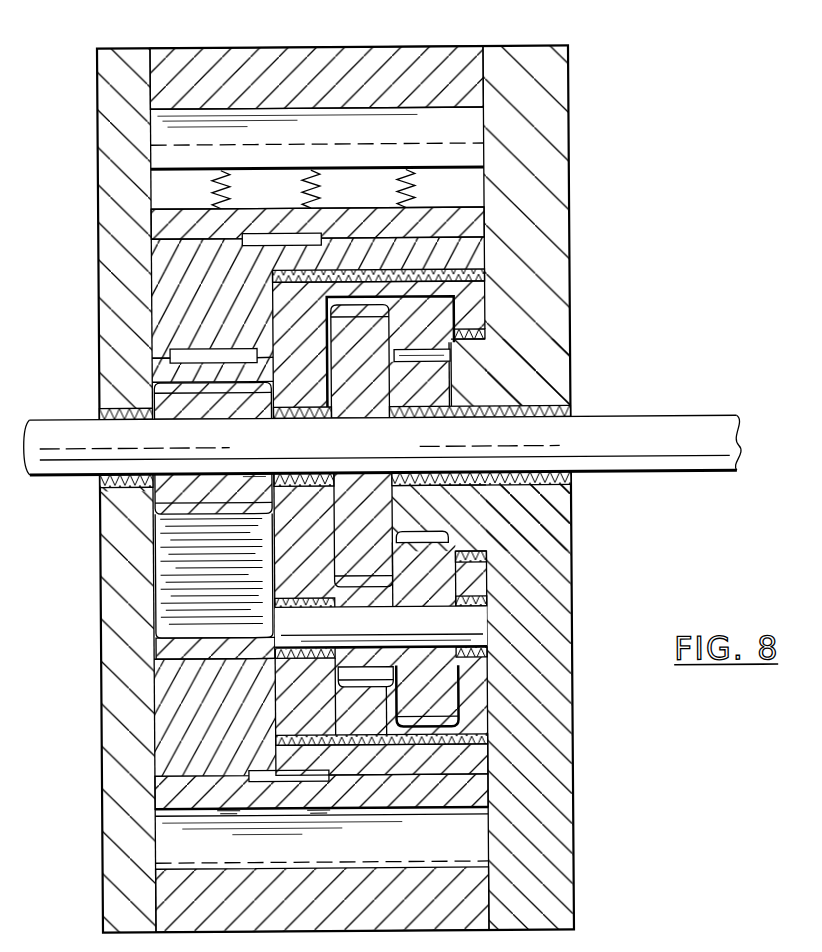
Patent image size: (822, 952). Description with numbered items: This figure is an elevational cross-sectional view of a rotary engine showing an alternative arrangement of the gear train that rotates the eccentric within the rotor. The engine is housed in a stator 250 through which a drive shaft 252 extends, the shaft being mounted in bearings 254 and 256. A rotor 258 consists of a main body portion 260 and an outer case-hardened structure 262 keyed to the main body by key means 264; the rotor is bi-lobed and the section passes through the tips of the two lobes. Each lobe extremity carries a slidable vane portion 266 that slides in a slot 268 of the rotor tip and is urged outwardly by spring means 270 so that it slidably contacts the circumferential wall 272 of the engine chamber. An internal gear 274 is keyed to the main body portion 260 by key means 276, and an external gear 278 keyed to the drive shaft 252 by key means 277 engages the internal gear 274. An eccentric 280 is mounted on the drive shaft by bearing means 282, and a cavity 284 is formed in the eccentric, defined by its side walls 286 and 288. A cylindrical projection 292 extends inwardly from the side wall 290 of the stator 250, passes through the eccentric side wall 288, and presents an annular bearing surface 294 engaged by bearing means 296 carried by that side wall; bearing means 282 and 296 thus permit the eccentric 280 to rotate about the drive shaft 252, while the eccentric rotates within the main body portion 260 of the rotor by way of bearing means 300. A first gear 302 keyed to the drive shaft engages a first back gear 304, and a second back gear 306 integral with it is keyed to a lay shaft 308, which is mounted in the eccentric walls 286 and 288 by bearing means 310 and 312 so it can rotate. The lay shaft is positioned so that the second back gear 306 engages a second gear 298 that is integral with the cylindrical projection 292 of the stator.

The stator 250 is at (576, 231).
The drive shaft 252 is at (683, 428).
The bearing 254 is at (550, 406).
The bearing 256 is at (116, 408).
The rotor 258 is at (168, 741).
The main body portion 260 is at (170, 707).
The outer case-hardened structure 262 is at (165, 225).
The key means 264 is at (278, 238).
The vane portion 266 is at (473, 126).
The slot 268 is at (464, 188).
The spring means 270 is at (380, 183).
The circumferential wall 272 is at (403, 110).
The internal gear 274 is at (152, 368).
The key means 276 is at (190, 350).
The key means 277 is at (191, 477).
The external gear 278 is at (175, 492).
The eccentric 280 is at (283, 551).
The bearing means 282 is at (302, 480).
The cavity 284 is at (462, 315).
The side wall 286 is at (308, 346).
The side wall 288 is at (478, 293).
The side wall 290 is at (572, 528).
The cylindrical projection 292 is at (440, 502).
The annular bearing surface 294 is at (470, 335).
The bearing means 296 is at (487, 556).
The second gear 298 is at (422, 355).
The bearing means 300 is at (460, 740).
The first gear 302 is at (378, 350).
The first back gear 304 is at (367, 662).
The second back gear 306 is at (445, 683).
The lay shaft 308 is at (480, 624).
The bearing means 310 is at (468, 607).
The bearing means 312 is at (305, 603).